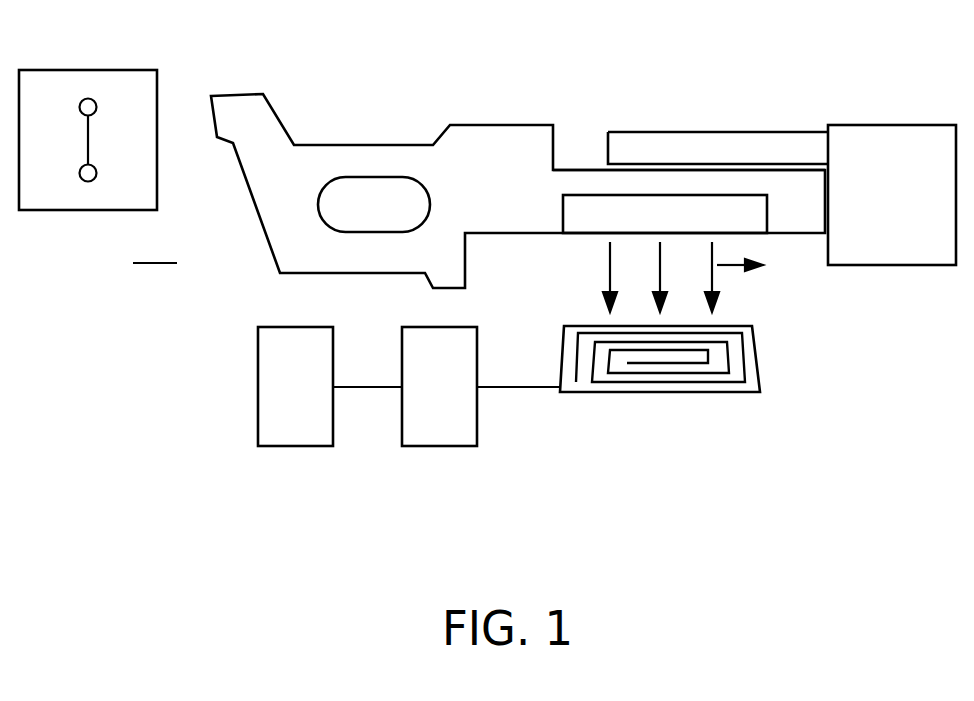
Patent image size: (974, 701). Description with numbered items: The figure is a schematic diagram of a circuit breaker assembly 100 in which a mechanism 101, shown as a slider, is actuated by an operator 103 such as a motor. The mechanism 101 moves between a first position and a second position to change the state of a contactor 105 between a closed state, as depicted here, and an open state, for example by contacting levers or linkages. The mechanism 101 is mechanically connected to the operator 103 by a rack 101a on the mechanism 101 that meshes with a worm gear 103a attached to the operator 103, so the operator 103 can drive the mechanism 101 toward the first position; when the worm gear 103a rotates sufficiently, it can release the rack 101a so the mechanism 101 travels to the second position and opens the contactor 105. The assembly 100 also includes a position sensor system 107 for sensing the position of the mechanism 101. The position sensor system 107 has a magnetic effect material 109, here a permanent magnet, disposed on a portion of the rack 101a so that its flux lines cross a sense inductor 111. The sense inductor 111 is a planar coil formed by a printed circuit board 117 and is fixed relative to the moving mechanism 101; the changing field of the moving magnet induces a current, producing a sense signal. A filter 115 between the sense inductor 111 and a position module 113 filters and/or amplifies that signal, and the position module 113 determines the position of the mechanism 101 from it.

The circuit breaker assembly 100 is at (348, 48).
The mechanism 101 is at (491, 168).
The rack 101a is at (588, 180).
The operator 103 is at (910, 211).
The worm gear 103a is at (717, 132).
The contactor 105 is at (148, 112).
The position sensor system 107 is at (822, 358).
The magnetic effect material 109 is at (575, 195).
The sense inductor 111 is at (718, 380).
The position module 113 is at (295, 447).
The filter 115 is at (437, 447).
The printed circuit board 117 is at (743, 395).